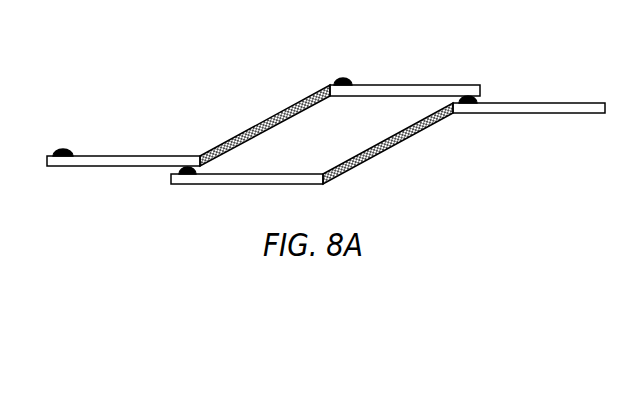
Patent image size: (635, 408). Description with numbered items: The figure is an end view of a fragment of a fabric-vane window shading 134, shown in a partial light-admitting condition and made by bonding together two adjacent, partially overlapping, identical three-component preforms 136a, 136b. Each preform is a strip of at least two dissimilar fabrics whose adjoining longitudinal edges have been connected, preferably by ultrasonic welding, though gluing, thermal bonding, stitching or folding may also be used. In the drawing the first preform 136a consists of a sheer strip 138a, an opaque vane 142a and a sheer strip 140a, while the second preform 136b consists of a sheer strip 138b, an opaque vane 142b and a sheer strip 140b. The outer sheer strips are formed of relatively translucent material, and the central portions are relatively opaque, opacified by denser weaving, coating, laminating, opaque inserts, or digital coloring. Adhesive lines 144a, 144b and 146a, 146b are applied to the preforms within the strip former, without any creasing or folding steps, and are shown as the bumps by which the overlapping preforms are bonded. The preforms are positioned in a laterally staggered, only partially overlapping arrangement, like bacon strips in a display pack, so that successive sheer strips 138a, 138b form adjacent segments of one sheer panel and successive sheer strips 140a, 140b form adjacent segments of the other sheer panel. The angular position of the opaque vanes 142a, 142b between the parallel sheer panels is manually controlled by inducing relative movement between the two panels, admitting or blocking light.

The fabric-vane window shading 134 is at (191, 100).
The sheer strip 138a is at (102, 157).
The sheer strip 138b is at (225, 181).
The sheer strip 140a is at (413, 92).
The sheer strip 140b is at (573, 110).
The opaque vane 142a is at (280, 111).
The opaque vane 142b is at (403, 142).
The adhesive line 144a is at (62, 149).
The adhesive line 144b is at (173, 169).
The adhesive line 146a is at (343, 77).
The adhesive line 146b is at (479, 99).
The three-component preform 136a is at (366, 74).
The three-component preform 136b is at (523, 129).